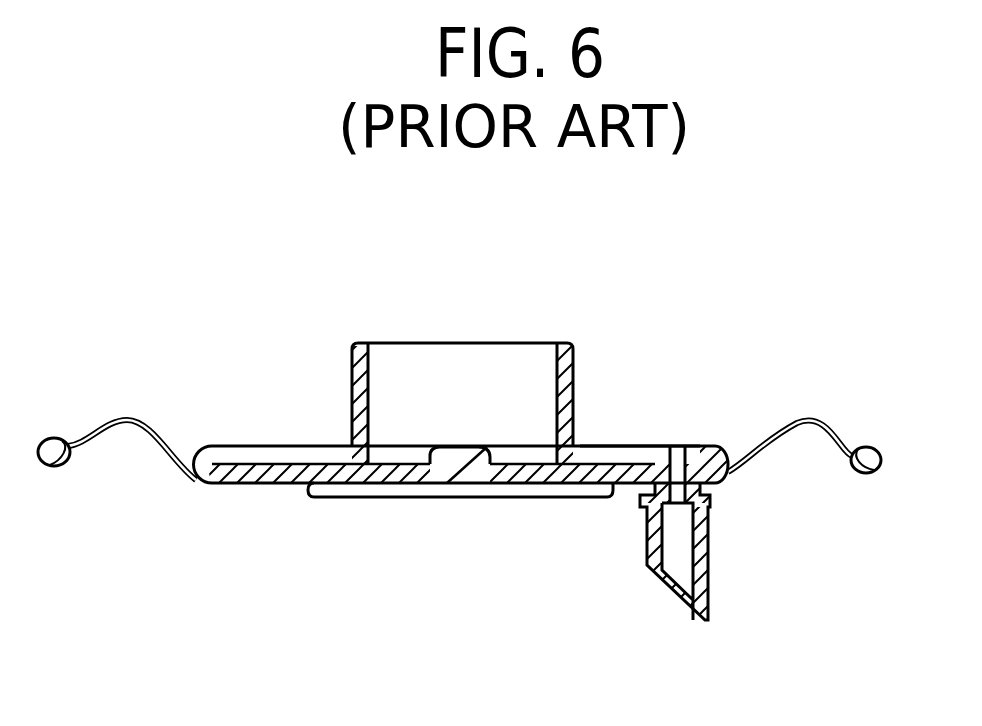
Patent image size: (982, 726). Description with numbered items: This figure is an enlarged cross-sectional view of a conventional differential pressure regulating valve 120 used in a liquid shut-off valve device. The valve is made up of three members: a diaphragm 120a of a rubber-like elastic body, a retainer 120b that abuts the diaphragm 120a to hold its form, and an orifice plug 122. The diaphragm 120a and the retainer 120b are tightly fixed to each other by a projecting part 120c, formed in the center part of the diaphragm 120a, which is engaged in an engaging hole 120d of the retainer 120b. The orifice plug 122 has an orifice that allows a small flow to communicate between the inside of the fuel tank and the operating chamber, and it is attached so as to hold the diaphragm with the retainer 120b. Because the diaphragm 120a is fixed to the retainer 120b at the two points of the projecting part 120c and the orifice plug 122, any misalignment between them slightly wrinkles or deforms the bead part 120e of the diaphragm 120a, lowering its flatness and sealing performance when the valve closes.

The differential pressure regulating valve 120 is at (160, 295).
The diaphragm 120a is at (803, 425).
The retainer 120b is at (630, 447).
The projecting part 120c is at (470, 460).
The engaging hole 120d is at (413, 467).
The bead part 120e is at (308, 497).
The orifice plug 122 is at (707, 563).